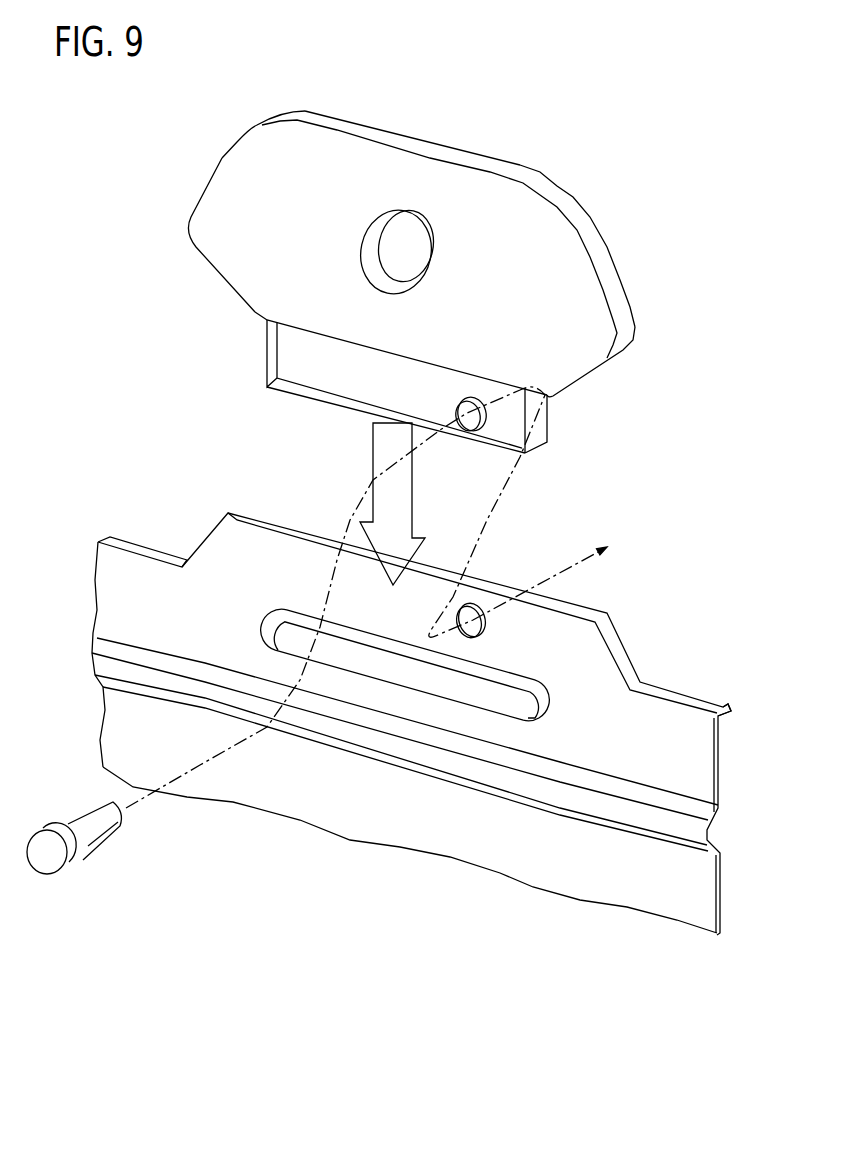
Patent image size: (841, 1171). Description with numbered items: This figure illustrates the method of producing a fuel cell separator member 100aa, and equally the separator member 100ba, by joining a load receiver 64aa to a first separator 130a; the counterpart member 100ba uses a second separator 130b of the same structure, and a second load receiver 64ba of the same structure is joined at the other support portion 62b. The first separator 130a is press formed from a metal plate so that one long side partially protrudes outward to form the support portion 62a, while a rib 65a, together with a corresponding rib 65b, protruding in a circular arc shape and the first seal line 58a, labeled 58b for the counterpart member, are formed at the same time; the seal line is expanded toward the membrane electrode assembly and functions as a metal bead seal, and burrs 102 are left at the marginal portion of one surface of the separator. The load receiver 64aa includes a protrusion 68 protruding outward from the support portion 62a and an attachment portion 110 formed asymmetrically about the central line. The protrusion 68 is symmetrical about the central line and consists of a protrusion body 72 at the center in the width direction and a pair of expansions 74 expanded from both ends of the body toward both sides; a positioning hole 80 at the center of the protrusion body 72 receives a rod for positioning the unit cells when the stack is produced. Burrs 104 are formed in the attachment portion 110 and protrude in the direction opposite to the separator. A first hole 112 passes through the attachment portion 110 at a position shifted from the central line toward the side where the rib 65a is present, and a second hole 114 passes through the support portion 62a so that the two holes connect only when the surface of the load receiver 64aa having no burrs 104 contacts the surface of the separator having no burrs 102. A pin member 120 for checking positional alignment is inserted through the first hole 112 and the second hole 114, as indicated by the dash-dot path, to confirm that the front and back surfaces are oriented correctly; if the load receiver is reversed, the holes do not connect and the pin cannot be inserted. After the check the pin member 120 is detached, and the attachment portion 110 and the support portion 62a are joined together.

The separator member 100aa is at (384, 529).
The separator member 100ba is at (137, 110).
The load receiver 64aa is at (457, 268).
The load receiver 64ba is at (574, 191).
The expansions 74 is at (225, 170).
The protrusion body 72 is at (389, 157).
The protrusion 68 is at (467, 158).
The positioning hole 80 is at (432, 260).
The burrs 104 is at (298, 387).
The attachment portion 110 is at (348, 377).
The first hole 112 is at (460, 409).
The support portion 62a is at (417, 728).
The support portion 62b is at (217, 547).
The second hole 114 is at (473, 613).
The burrs 102 is at (728, 712).
The rib 65a is at (468, 678).
The rib 65b is at (540, 712).
The first seal line 58a is at (405, 798).
The rib 58b is at (627, 810).
The first separator 130a is at (410, 875).
The second separator 130b is at (543, 875).
The pin member 120 is at (53, 860).